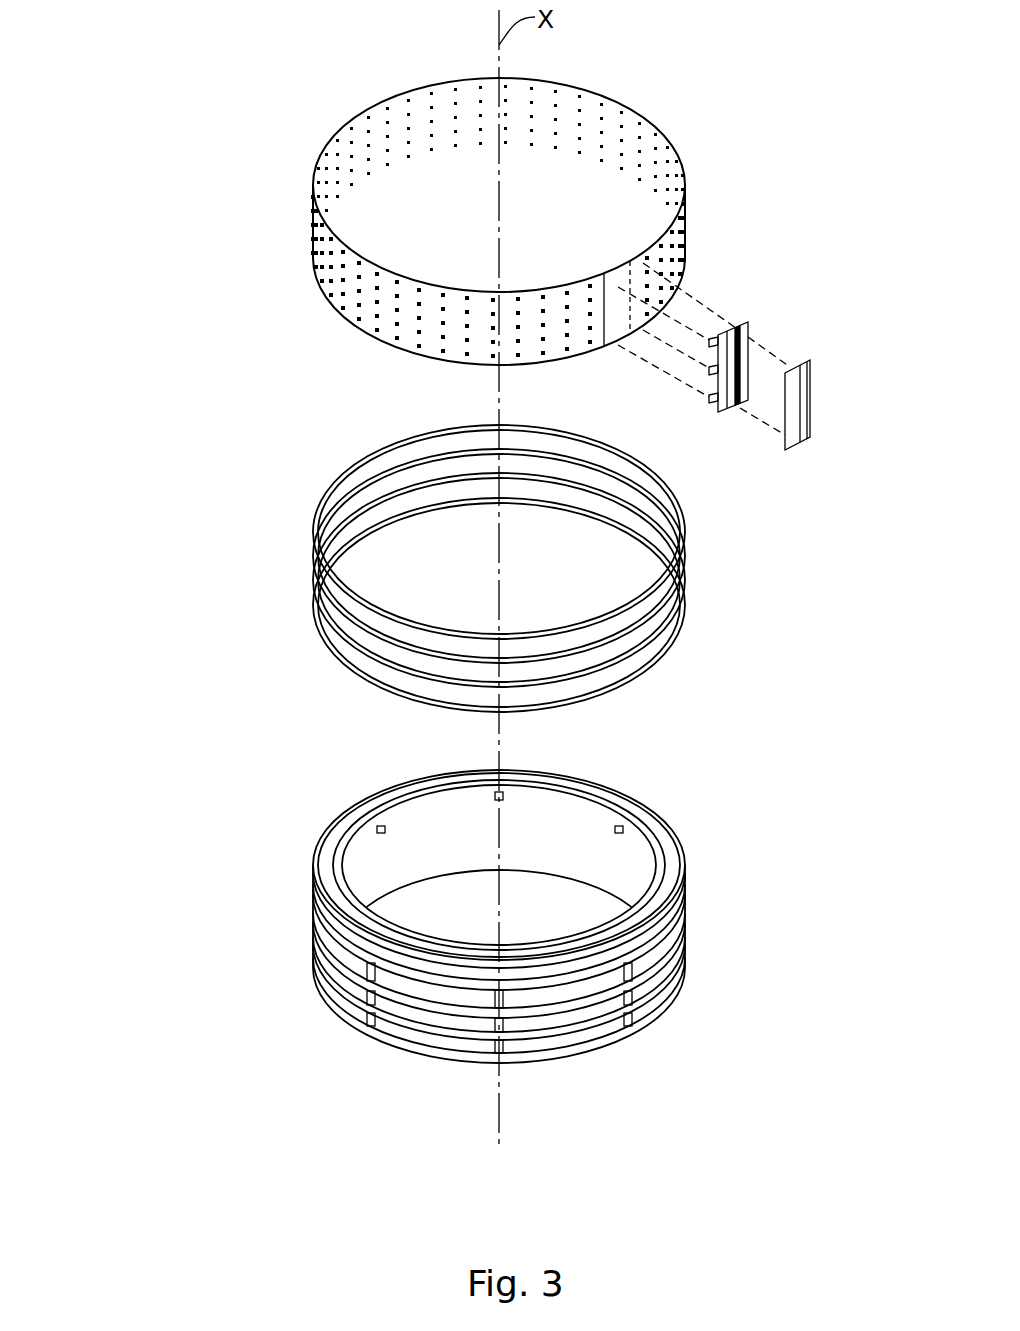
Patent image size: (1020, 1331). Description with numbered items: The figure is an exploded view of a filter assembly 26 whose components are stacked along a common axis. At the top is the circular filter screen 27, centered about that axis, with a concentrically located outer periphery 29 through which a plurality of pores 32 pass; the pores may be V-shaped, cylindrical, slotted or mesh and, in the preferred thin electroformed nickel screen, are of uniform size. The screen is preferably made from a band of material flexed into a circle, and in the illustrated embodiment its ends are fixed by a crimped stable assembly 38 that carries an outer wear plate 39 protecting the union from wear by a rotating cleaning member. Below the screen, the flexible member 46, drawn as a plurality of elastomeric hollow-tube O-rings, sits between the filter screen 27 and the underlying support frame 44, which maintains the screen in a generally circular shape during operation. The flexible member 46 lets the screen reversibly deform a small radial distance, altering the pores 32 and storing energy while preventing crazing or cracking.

The filter assembly 26 is at (195, 334).
The filter screen 27 is at (320, 152).
The outer periphery 29 is at (683, 238).
The pores 32 is at (357, 290).
The crimped stable assembly 38 is at (737, 328).
The outer wear plate 39 is at (808, 392).
The support frame 44 is at (665, 827).
The flexible member 46 is at (358, 675).